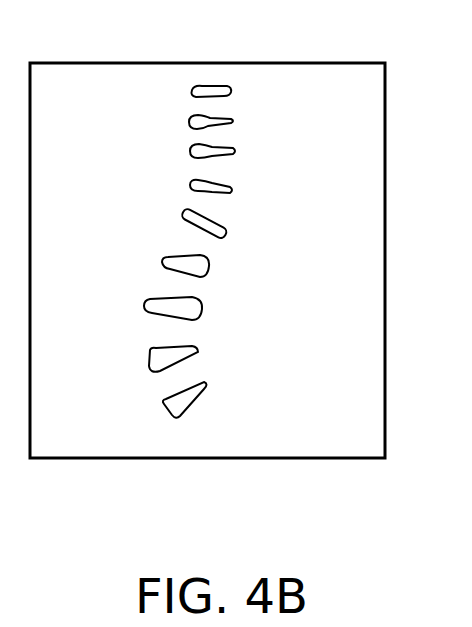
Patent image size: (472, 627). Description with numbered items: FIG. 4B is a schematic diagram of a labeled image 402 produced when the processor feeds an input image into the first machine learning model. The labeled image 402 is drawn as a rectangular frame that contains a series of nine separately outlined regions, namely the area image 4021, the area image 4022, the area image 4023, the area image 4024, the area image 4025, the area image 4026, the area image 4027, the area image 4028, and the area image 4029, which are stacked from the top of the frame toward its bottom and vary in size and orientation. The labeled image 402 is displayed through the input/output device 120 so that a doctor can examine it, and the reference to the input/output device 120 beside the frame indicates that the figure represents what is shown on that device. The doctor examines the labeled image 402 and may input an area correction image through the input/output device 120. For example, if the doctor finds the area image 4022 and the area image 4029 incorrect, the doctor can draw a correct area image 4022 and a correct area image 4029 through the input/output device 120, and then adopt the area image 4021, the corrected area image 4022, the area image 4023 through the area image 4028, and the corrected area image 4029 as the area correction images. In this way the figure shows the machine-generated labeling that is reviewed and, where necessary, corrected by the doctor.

The input/output device 120 is at (447, 527).
The labeled image 402 is at (206, 460).
The area image 4021 is at (212, 85).
The area image 4022 is at (189, 122).
The area image 4023 is at (190, 151).
The area image 4024 is at (190, 184).
The area image 4025 is at (183, 221).
The area image 4026 is at (161, 265).
The area image 4027 is at (144, 308).
The area image 4028 is at (150, 360).
The area image 4029 is at (172, 403).